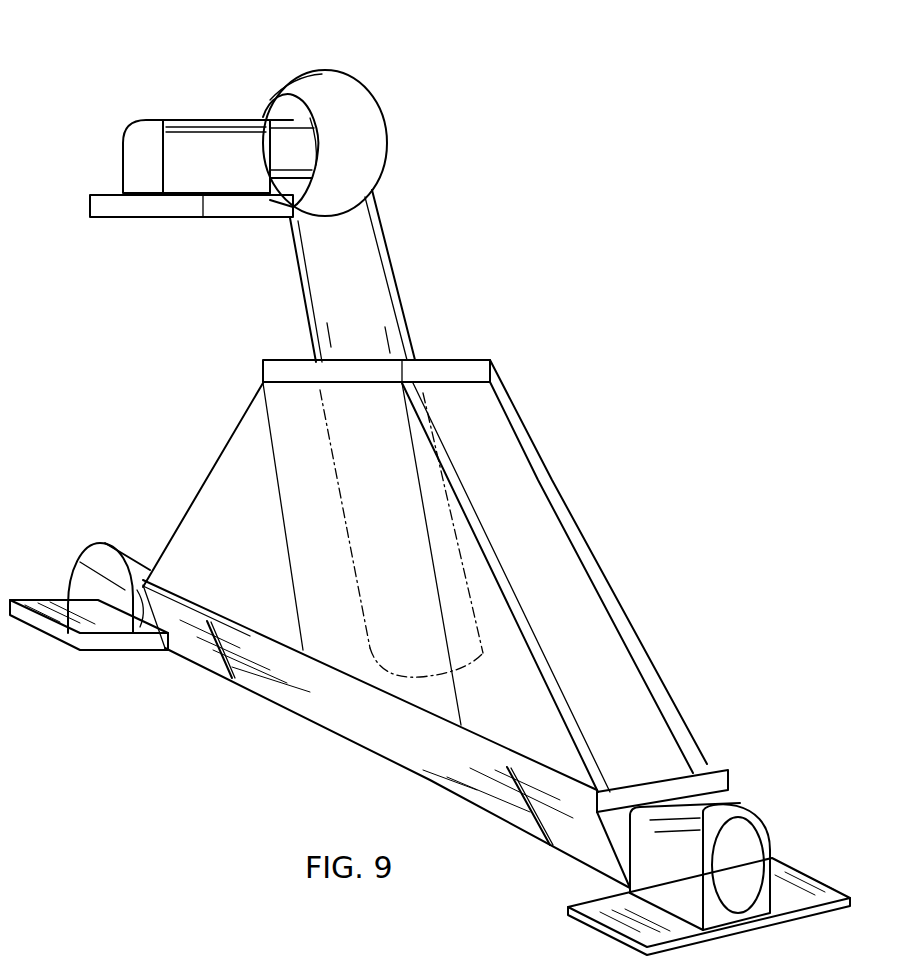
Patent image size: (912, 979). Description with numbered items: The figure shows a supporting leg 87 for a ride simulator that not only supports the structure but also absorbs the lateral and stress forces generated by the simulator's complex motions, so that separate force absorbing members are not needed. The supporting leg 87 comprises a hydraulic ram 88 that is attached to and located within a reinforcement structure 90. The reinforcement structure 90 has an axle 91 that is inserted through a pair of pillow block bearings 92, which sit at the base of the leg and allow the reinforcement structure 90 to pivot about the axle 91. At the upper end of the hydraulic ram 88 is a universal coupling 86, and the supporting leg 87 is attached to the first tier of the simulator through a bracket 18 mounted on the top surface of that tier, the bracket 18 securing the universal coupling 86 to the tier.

The bracket 18 is at (205, 120).
The universal coupling 86 is at (338, 70).
The supporting leg 87 is at (522, 296).
The hydraulic ram 88 is at (392, 255).
The reinforcement structure 90 is at (547, 460).
The axle 91 is at (747, 863).
The pillow block bearings 92 is at (83, 553).